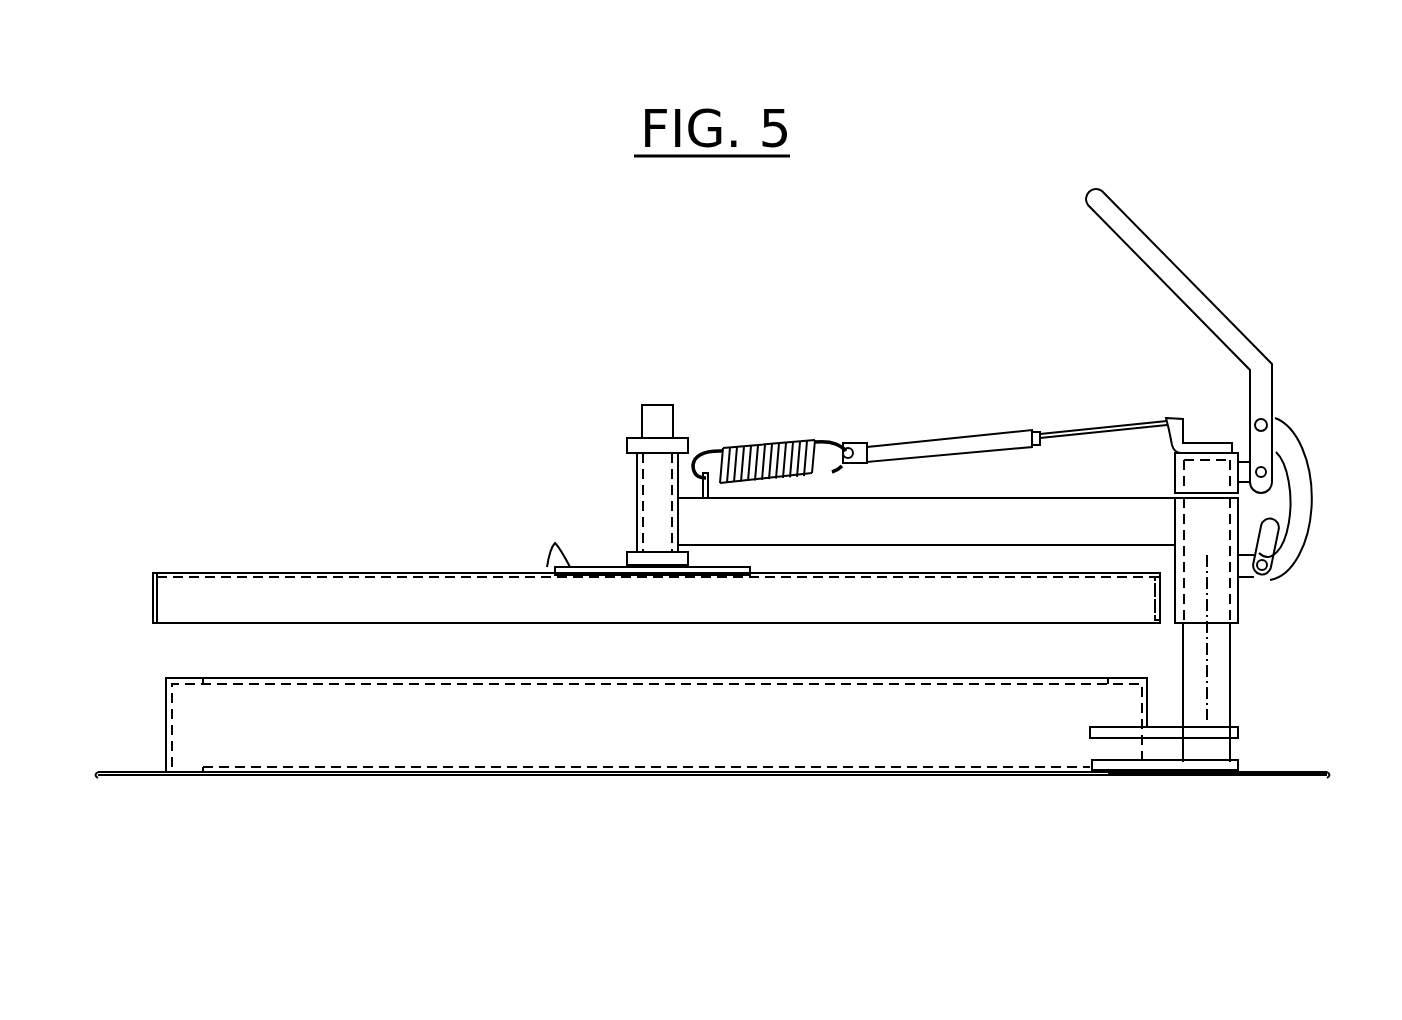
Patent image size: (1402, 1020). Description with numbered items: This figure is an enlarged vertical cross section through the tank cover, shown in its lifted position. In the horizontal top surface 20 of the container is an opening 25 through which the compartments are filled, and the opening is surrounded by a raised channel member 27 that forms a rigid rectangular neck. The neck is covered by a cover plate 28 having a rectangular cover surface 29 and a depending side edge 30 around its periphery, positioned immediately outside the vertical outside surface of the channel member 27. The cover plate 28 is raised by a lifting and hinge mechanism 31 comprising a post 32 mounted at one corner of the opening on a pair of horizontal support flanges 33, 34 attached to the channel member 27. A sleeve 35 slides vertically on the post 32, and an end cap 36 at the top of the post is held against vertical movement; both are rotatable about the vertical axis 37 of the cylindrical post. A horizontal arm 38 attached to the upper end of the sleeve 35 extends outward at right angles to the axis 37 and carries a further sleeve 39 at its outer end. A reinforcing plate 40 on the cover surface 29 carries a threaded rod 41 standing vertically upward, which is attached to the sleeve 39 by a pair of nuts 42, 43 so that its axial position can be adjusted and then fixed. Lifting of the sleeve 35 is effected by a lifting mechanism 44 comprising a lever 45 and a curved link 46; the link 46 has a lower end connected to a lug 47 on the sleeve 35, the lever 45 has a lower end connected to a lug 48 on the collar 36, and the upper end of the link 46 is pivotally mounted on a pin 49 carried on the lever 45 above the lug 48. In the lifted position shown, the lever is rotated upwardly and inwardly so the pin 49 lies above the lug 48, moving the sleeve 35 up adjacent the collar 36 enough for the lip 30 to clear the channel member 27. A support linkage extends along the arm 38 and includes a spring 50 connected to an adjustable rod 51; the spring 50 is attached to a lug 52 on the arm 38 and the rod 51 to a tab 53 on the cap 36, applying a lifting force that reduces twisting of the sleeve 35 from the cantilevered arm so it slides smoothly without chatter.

The horizontal top surface 20 is at (147, 775).
The opening 25 is at (203, 775).
The raised channel member 27 is at (166, 720).
The cover plate 28 is at (656, 562).
The rectangular cover surface 29 is at (362, 573).
The depending side edge 30 is at (157, 600).
The lifting and hinge mechanism 31 is at (1062, 423).
The post 32 is at (1268, 658).
The horizontal support flange 33 is at (1238, 774).
The horizontal support flange 34 is at (1168, 738).
The sleeve 35 is at (1240, 600).
The end cap 36 is at (1175, 458).
The vertical axis 37 is at (1208, 695).
The horizontal arm 38 is at (932, 545).
The further sleeve 39 is at (637, 498).
The reinforcing plate 40 is at (547, 568).
The threaded rod 41 is at (660, 405).
The nut 42 is at (690, 450).
The nut 43 is at (690, 556).
The lifting mechanism 44 is at (1231, 333).
The lever 45 is at (1133, 213).
The link 46 is at (1313, 497).
The lug 47 is at (1282, 533).
The lug 48 is at (1268, 418).
The pin 49 is at (1272, 423).
The spring 50 is at (782, 440).
The adjustable rod 51 is at (882, 440).
The lug 52 is at (710, 490).
The tab 53 is at (1168, 418).